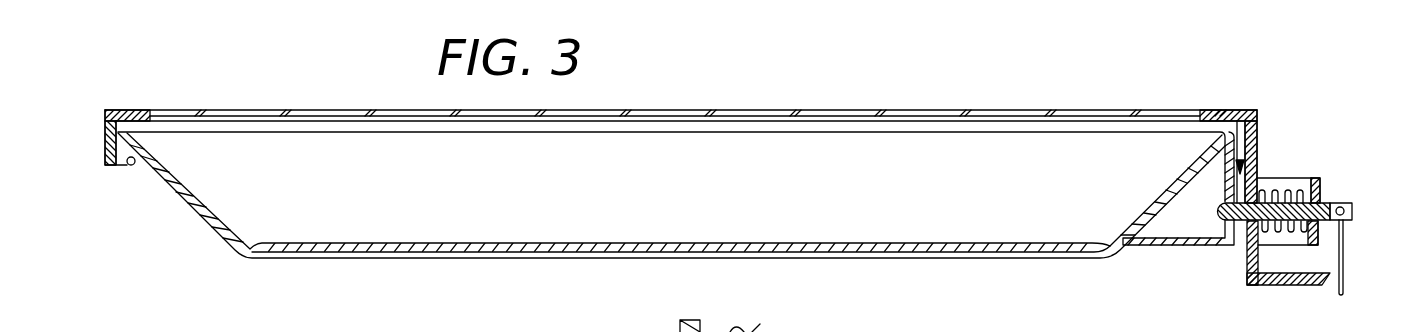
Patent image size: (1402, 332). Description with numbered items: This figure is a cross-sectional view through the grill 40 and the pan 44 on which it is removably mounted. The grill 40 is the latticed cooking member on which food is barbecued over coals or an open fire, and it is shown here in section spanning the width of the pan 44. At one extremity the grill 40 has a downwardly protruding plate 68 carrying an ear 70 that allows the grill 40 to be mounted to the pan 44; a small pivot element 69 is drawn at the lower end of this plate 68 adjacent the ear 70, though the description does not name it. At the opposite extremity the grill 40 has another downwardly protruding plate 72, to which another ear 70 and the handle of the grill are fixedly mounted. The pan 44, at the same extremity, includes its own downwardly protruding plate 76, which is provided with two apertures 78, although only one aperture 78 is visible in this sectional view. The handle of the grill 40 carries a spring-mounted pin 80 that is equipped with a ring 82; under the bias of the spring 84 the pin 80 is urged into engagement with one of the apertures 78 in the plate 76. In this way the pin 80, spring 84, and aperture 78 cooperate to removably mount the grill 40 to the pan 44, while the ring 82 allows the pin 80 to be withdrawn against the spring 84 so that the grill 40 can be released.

The grill 40 is at (705, 110).
The pan 44 is at (984, 242).
The downwardly protruding plate 68 is at (104, 127).
The pivot pin 69 is at (131, 166).
The ear 70 is at (1280, 286).
The downwardly protruding plate 72 is at (1255, 133).
The downwardly protruding plate 76 is at (1241, 171).
The aperture 78 is at (1242, 226).
The spring-mounted pin 80 is at (1329, 203).
The ring 82 is at (1347, 268).
The spring 84 is at (1289, 190).